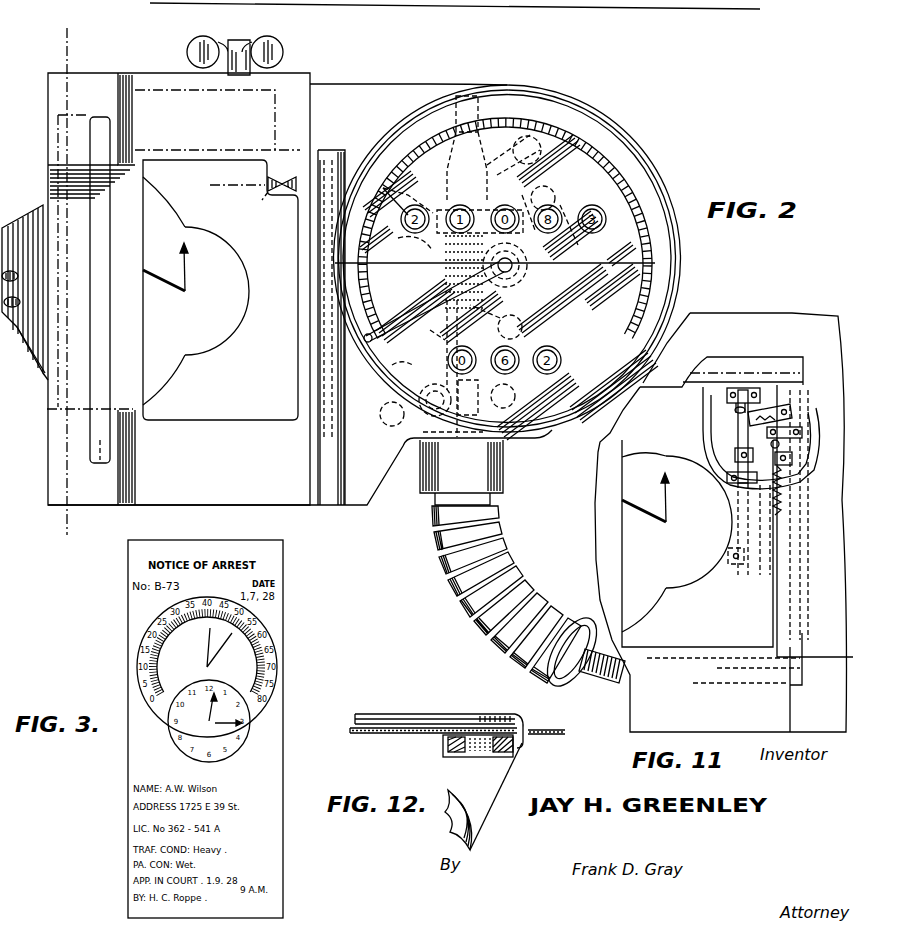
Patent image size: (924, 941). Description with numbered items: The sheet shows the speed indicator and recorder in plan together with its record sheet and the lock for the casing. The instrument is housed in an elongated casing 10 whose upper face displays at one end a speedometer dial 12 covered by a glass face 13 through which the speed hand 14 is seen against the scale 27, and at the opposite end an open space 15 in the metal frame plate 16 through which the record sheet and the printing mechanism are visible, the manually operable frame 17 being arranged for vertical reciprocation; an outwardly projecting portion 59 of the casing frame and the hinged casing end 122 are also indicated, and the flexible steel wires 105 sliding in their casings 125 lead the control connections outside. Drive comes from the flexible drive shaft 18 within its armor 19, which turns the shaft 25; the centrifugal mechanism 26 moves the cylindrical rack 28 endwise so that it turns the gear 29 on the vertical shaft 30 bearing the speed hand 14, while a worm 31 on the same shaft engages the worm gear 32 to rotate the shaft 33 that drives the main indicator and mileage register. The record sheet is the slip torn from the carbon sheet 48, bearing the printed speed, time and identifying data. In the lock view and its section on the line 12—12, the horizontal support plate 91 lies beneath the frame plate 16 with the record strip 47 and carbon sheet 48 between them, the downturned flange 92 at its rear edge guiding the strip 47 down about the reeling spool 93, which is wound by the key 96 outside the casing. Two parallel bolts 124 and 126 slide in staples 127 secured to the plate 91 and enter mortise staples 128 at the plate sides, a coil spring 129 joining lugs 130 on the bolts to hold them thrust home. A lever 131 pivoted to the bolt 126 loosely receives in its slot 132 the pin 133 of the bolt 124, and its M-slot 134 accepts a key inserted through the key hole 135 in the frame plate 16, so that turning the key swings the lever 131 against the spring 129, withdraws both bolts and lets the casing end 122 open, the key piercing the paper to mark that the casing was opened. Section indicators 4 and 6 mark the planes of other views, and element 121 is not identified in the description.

In FIG. 2, the section line 4- 4 is at (86, 532).
In FIG. 2, the section line 6- 6 is at (8, 270).
In FIG. 2, the casing 10 is at (393, 83).
In FIG. 2, the speedometer dial 12 is at (345, 185).
In FIG. 11, the speedometer dial 12 is at (674, 415).
In FIG. 2, the glass face 13 is at (509, 287).
In FIG. 2, the speed hand 14 is at (435, 310).
In FIG. 2, the open space 15 is at (195, 414).
In FIG. 11, the open space 15 is at (622, 545).
In FIG. 2, the metal frame plate 16 is at (220, 314).
In FIG. 11, the metal frame plate 16 is at (697, 543).
In FIG. 2, the manually operable frame 17 is at (91, 362).
In FIG. 2, the flexible drive shaft 18 is at (607, 684).
In FIG. 2, the armor 19 is at (448, 560).
In FIG. 2, the shaft 25 is at (510, 327).
In FIG. 2, the centrifugal mechanism 26 is at (527, 150).
In FIG. 2, the scale 27 is at (612, 212).
In FIG. 2, the cylindrical rack 28 is at (415, 248).
In FIG. 2, the gear 29 is at (543, 198).
In FIG. 2, the vertical shaft 30 is at (510, 271).
In FIG. 2, the worm 31 is at (480, 405).
In FIG. 2, the worm gear 32 is at (415, 405).
In FIG. 2, the shaft 33 is at (403, 372).
In FIG. 12, the record strip 47 is at (500, 784).
In FIG. 2, the carbon sheet 48 is at (325, 333).
In FIG. 11, the carbon sheet 48 is at (832, 581).
In FIG. 12, the carbon sheet 48 is at (537, 700).
In FIG. 2, the outwardly projecting portion 59 is at (38, 340).
In FIG. 12, the horizontal support plate 91 is at (392, 734).
In FIG. 12, the flange 92 is at (524, 742).
In FIG. 12, the reeling spool 93 is at (492, 825).
In FIG. 2, the key 96 is at (188, 52).
In FIG. 2, the flexible steel wires 105 is at (20, 303).
In FIG. 2, the lever 121 is at (210, 168).
In FIG. 2, the casing end 122 is at (46, 387).
In FIG. 11, the bolt 124 is at (790, 475).
In FIG. 12, the bolt 124 is at (520, 748).
In FIG. 2, the casings 125 is at (12, 270).
In FIG. 11, the bolt 126 is at (746, 372).
In FIG. 12, the bolt 126 is at (448, 749).
In FIG. 11, the staples 127 is at (790, 434).
In FIG. 12, the staples 127 is at (460, 757).
In FIG. 11, the staples 128 is at (768, 685).
In FIG. 11, the coil spring 129 is at (752, 568).
In FIG. 11, the lugs 130 is at (745, 565).
In FIG. 11, the lever 131 is at (790, 405).
In FIG. 11, the slot 132 is at (735, 410).
In FIG. 11, the pin 133 is at (738, 395).
In FIG. 2, the M-slot 134 is at (262, 200).
In FIG. 11, the M-slot 134 is at (780, 437).
In FIG. 2, the key hole 135 is at (286, 174).